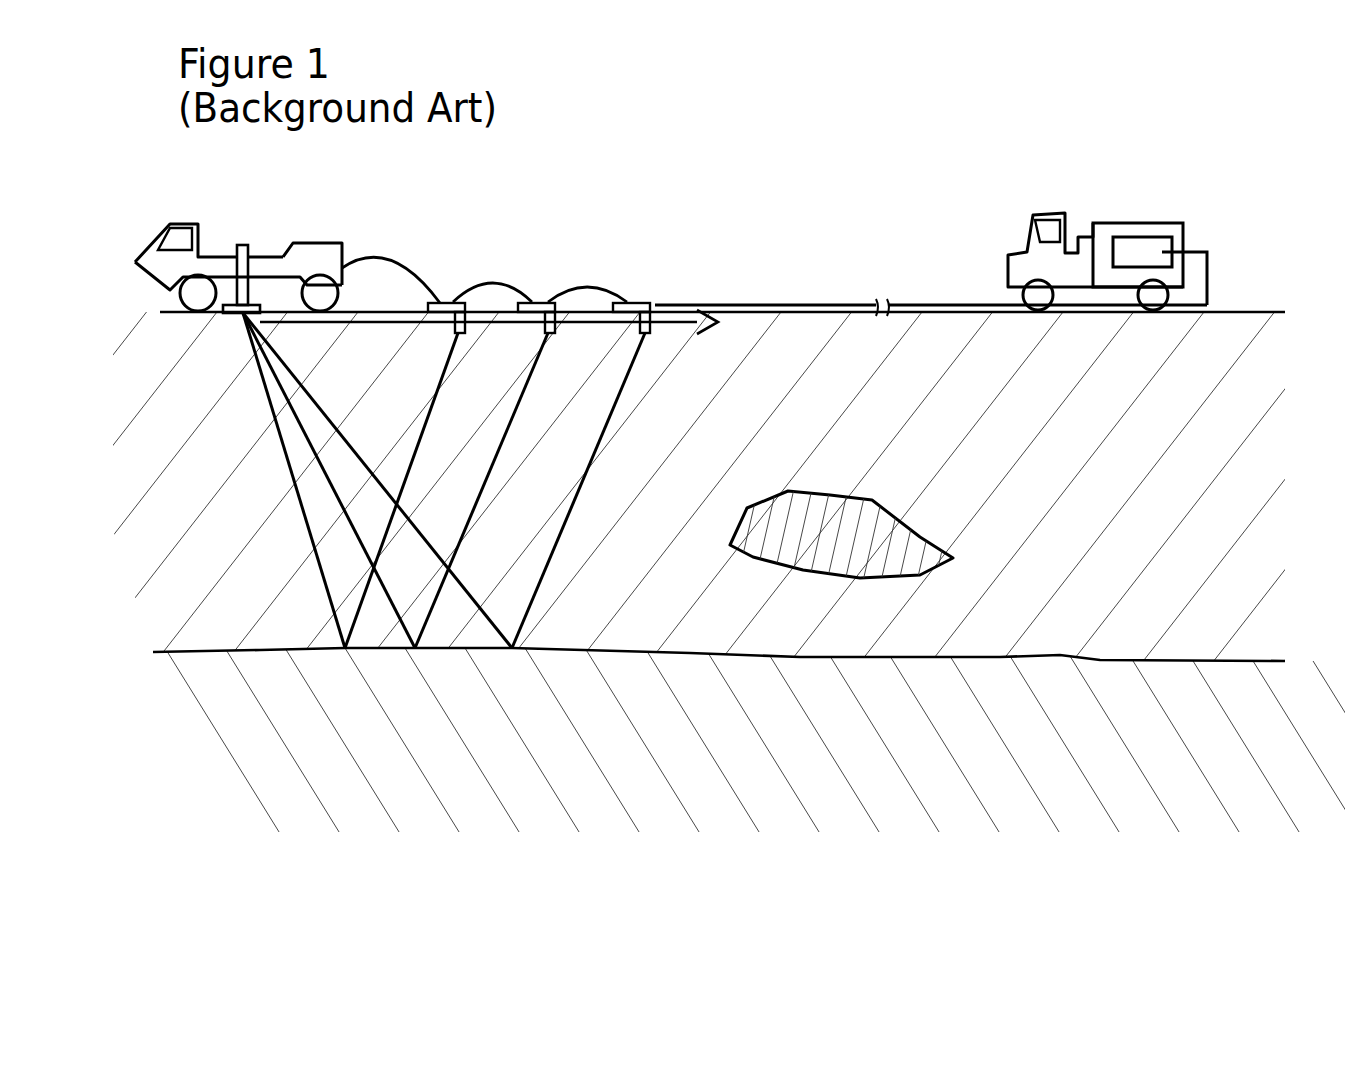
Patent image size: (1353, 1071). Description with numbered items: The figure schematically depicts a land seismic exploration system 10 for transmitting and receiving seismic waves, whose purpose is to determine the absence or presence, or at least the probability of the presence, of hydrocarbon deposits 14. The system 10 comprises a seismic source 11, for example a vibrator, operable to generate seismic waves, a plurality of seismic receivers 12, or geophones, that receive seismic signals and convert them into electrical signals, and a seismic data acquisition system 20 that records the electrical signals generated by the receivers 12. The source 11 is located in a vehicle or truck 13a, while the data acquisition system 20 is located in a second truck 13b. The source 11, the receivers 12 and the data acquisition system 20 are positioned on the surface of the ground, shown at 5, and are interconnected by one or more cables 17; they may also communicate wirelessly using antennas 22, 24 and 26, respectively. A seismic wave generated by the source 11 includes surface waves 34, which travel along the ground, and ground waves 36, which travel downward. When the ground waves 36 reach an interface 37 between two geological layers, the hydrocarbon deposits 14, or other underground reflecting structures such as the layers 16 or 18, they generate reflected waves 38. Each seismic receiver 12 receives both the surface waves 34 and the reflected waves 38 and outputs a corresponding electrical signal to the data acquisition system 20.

The land seismic exploration system 10 is at (928, 182).
The vehicle/truck 13a is at (155, 247).
The seismic source 11 is at (248, 250).
The antenna 24 is at (320, 243).
The cable 17 is at (410, 262).
The antenna 26 is at (542, 302).
The seismic receiver 12 is at (635, 302).
The surface wave 34 is at (385, 323).
The ground wave 36 is at (267, 403).
The reflected wave 38 is at (602, 435).
The hydrocarbon deposit 14 is at (875, 500).
The underground reflecting structure 16 is at (1167, 508).
The interface 37 is at (982, 657).
The underground reflecting structure 18 is at (937, 770).
The earth surface 5 is at (998, 312).
The vehicle/truck 13b is at (1162, 223).
The antenna 22 is at (1112, 223).
The seismic data acquisition system 20 is at (1177, 240).